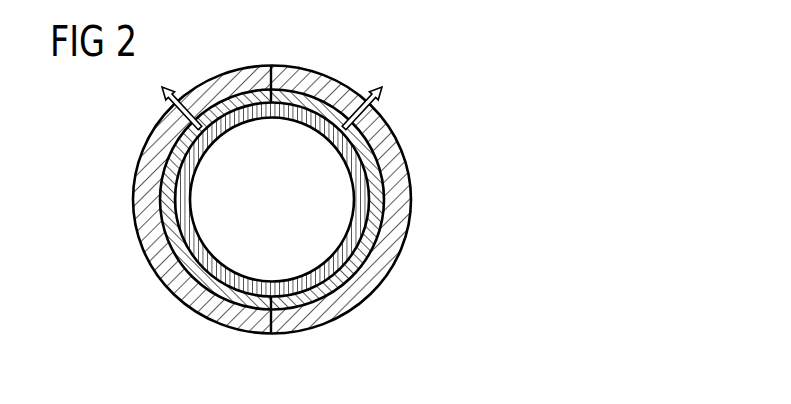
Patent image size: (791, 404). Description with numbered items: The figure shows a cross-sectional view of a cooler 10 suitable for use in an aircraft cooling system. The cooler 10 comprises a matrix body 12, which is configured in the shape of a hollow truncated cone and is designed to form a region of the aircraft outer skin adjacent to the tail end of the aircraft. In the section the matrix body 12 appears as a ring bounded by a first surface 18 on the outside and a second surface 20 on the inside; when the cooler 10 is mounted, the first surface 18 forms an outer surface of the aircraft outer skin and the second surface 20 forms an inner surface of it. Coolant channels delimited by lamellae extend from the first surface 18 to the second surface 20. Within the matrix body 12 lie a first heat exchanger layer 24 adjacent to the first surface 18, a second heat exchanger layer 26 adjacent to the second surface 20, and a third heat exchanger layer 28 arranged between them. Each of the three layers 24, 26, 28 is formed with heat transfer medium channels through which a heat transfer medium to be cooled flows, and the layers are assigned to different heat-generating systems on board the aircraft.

The cooler 10 is at (285, 185).
The matrix body 12 is at (285, 199).
The first surface 18 is at (393, 260).
The second surface 20 is at (352, 233).
The first heat exchanger layer 24 is at (273, 199).
The second heat exchanger layer 26 is at (178, 192).
The third heat exchanger layer 28 is at (175, 242).